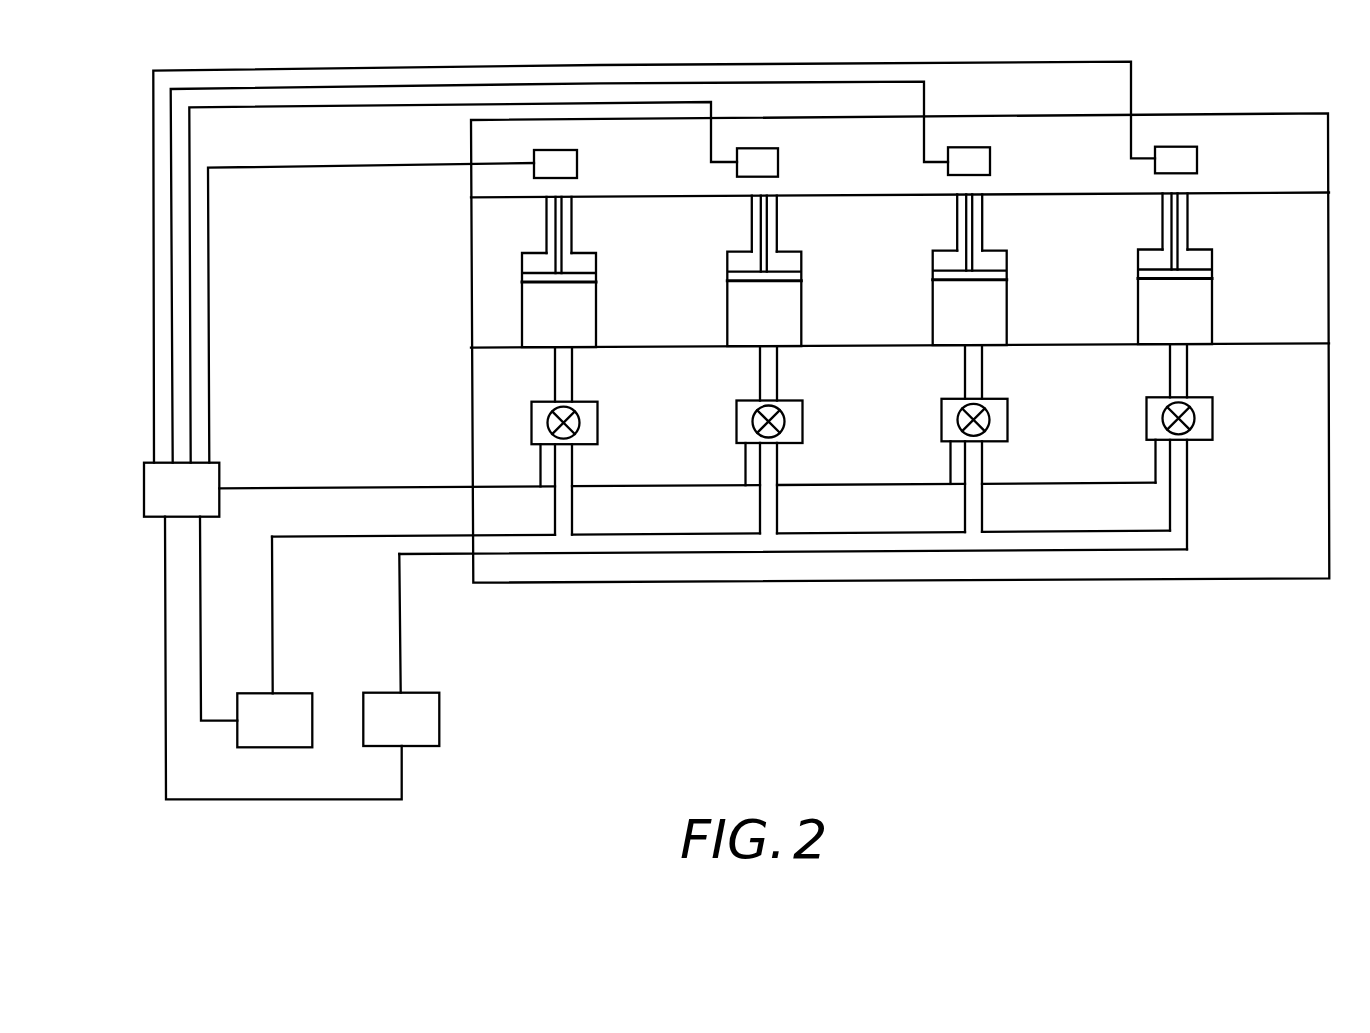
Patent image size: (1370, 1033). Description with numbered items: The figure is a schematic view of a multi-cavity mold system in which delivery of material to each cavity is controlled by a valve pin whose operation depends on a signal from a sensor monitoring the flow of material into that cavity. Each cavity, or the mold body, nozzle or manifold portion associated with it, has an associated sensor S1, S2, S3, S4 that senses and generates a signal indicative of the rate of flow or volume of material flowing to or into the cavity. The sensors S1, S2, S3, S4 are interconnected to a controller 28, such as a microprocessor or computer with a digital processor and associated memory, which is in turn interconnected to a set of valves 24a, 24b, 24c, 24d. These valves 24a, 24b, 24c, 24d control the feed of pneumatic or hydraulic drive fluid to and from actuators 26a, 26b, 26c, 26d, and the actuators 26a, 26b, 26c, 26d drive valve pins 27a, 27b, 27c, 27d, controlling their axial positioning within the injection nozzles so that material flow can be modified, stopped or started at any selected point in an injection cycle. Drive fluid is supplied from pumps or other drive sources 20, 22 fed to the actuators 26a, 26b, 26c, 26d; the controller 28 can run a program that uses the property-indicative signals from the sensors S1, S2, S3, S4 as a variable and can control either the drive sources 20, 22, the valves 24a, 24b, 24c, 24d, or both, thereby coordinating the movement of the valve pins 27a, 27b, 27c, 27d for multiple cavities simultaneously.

The source of drive fluid 20 is at (312, 693).
The source of drive fluid 22 is at (439, 693).
The valve 24a is at (598, 402).
The valve 24b is at (802, 400).
The valve 24c is at (1008, 399).
The valve 24d is at (1213, 397).
The actuator 26a is at (596, 299).
The actuator 26b is at (801, 298).
The actuator 26c is at (1007, 297).
The actuator 26d is at (1212, 295).
The valve pin 27a is at (561, 228).
The valve pin 27b is at (766, 228).
The valve pin 27c is at (972, 224).
The valve pin 27d is at (1177, 223).
The controller 28 is at (219, 463).
The sensor S1 is at (555, 164).
The sensor S2 is at (757, 162).
The sensor S3 is at (969, 161).
The sensor S4 is at (1176, 160).